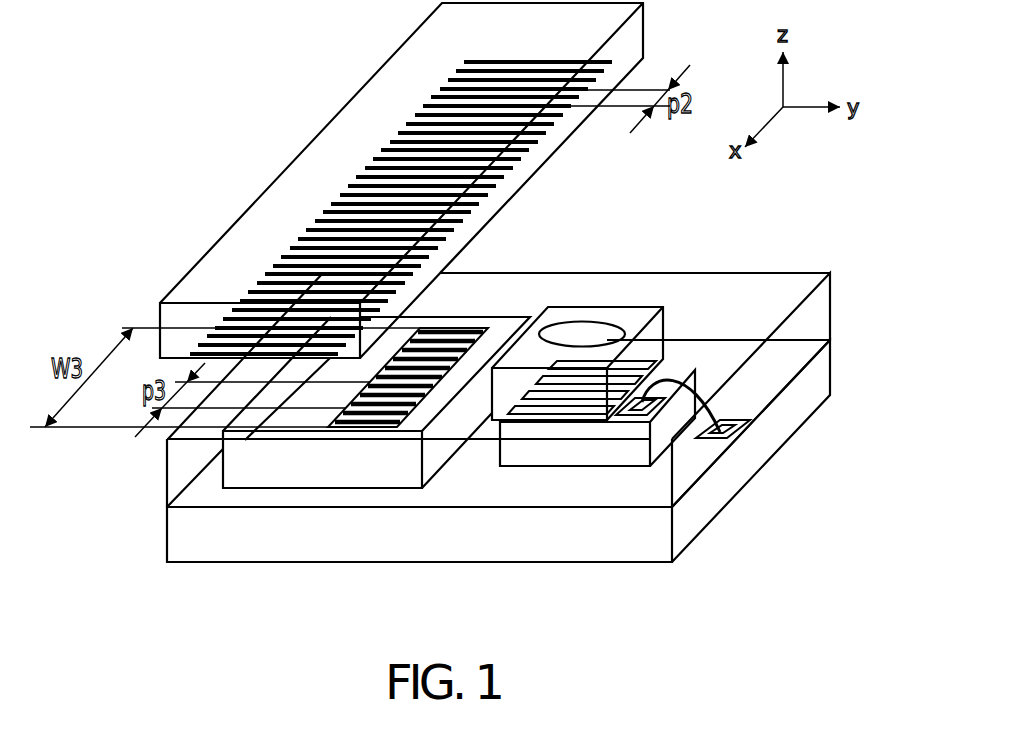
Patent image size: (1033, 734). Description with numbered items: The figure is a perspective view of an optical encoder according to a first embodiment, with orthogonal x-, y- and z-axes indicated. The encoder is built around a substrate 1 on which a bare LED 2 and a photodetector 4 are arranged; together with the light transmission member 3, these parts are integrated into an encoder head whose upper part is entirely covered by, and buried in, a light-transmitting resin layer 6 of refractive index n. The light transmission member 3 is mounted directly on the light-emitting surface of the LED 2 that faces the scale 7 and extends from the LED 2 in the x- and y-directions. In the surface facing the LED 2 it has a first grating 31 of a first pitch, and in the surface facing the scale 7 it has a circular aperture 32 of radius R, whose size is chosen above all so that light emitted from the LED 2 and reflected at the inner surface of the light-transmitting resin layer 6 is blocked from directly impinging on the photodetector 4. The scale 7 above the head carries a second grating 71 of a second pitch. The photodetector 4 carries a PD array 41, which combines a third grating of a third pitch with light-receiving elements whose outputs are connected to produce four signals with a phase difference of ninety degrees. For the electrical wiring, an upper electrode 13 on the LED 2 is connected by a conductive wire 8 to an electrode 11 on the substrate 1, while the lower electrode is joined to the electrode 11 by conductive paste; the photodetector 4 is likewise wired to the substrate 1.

The substrate 1 is at (599, 550).
The light-transmitting resin layer 6 is at (823, 306).
The scale 7 is at (255, 222).
The second grating 71 is at (250, 293).
The photodetector 4 is at (277, 472).
The PD array 41 is at (365, 428).
The light transmission member 3 is at (665, 320).
The aperture 32 is at (575, 321).
The first grating 31 is at (642, 370).
The bare LED 2 is at (675, 425).
The upper electrode 13 is at (634, 407).
The conductive wire 8 is at (712, 411).
The electrode 11 is at (736, 438).